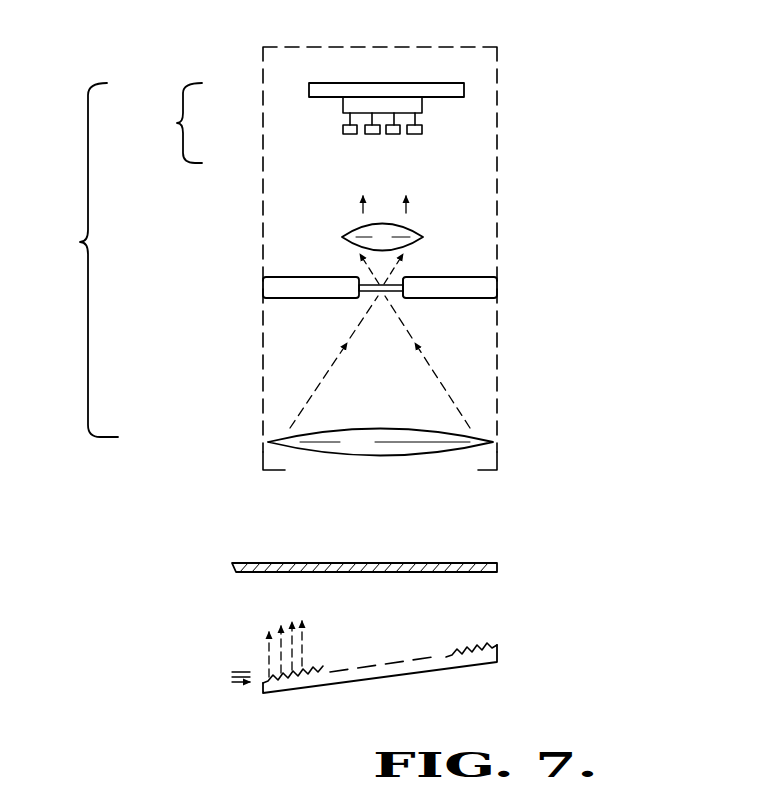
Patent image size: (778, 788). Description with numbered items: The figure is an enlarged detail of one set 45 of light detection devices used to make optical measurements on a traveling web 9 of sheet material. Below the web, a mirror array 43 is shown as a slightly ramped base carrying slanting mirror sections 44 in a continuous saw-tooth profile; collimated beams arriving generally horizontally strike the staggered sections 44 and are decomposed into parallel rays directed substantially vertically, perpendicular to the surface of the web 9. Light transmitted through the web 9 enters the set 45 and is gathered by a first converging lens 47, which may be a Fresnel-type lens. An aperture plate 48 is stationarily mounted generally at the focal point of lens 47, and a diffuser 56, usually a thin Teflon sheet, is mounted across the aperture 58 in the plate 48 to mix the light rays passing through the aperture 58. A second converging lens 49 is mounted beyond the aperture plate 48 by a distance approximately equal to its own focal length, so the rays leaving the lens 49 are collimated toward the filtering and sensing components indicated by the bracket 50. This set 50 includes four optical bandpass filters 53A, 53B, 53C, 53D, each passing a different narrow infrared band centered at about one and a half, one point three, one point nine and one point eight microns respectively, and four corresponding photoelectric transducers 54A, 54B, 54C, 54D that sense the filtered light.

The set of light detection devices 45 is at (78, 260).
The set of filtering and sensing components 50 is at (173, 123).
The photoelectric transducer 54A is at (347, 118).
The photoelectric transducer 54B is at (371, 118).
The photoelectric transducer 54C is at (393, 118).
The photoelectric transducer 54D is at (416, 118).
The optical bandpass filter 53A is at (343, 130).
The optical bandpass filter 53B is at (373, 135).
The optical bandpass filter 53C is at (396, 135).
The optical bandpass filter 53D is at (422, 130).
The second converging lens 49 is at (343, 237).
The aperture plate 48 is at (307, 299).
The aperture 58 is at (361, 299).
The diffuser 56 is at (399, 296).
The converging lens 47 is at (268, 440).
The web 9 is at (250, 563).
The mirror array 43 is at (288, 693).
The mirror section 44 is at (465, 650).